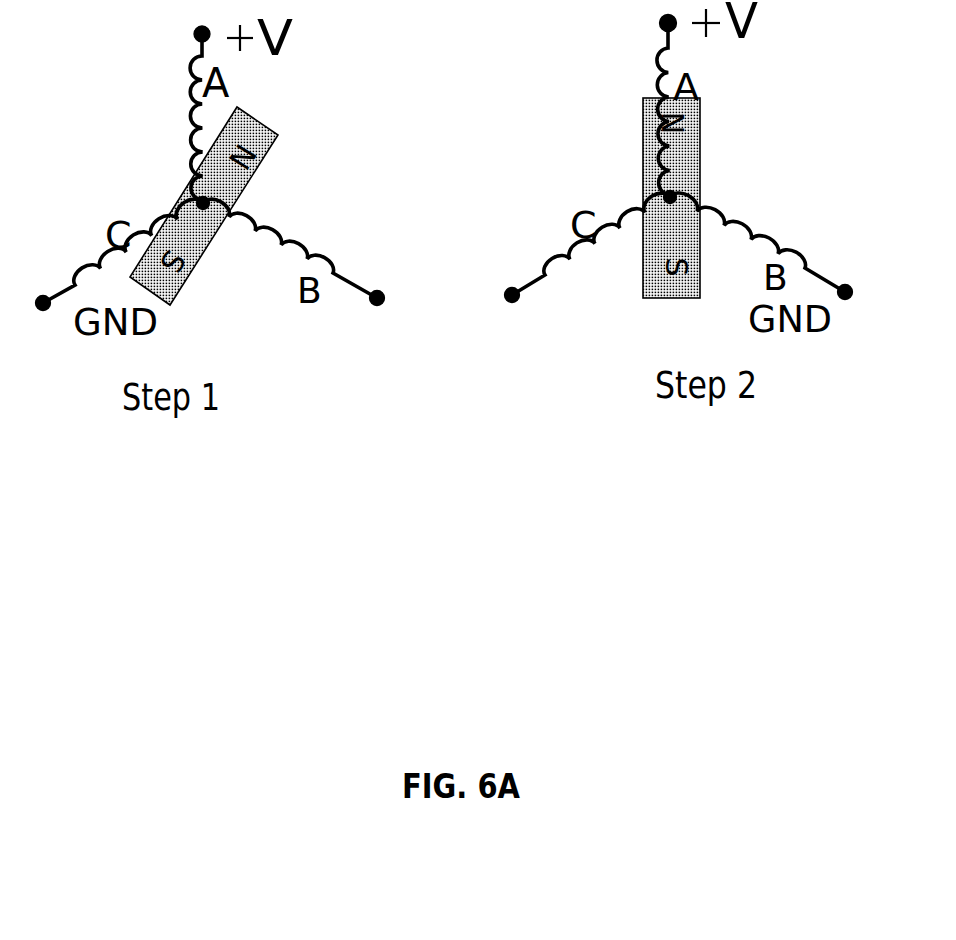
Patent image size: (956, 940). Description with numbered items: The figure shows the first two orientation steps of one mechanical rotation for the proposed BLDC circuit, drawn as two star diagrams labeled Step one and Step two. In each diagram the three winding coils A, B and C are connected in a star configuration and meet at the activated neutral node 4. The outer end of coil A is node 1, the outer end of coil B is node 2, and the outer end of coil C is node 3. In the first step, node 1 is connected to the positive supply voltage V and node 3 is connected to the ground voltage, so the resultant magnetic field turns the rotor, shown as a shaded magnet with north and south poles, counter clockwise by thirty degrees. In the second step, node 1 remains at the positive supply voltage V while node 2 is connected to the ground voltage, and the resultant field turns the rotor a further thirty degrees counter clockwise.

The node 1 is at (421, 27).
The node 2 is at (607, 270).
The node 3 is at (276, 273).
The neutral node 4 is at (449, 182).